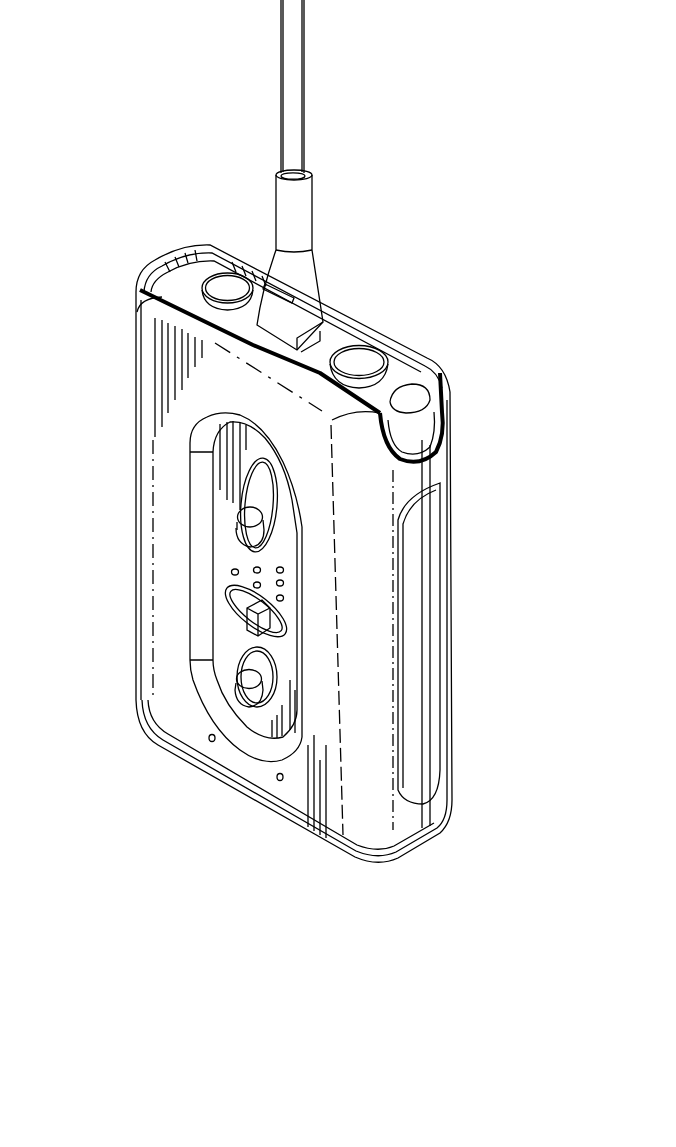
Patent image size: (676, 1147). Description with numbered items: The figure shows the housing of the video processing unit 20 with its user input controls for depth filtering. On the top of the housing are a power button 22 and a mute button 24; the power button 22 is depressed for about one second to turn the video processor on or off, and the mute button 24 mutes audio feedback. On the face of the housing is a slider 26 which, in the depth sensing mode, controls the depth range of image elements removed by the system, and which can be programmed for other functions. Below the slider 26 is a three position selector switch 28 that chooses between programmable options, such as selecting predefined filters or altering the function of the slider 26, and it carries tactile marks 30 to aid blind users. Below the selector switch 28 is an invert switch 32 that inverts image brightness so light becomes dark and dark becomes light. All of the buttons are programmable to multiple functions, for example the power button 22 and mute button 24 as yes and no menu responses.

The video processing unit 20 is at (484, 845).
The power button 22 is at (363, 360).
The mute button 24 is at (228, 287).
The slider 26 is at (252, 534).
The three position selector switch 28 is at (290, 627).
The tactile marks 30 is at (287, 572).
The invert switch 32 is at (247, 692).